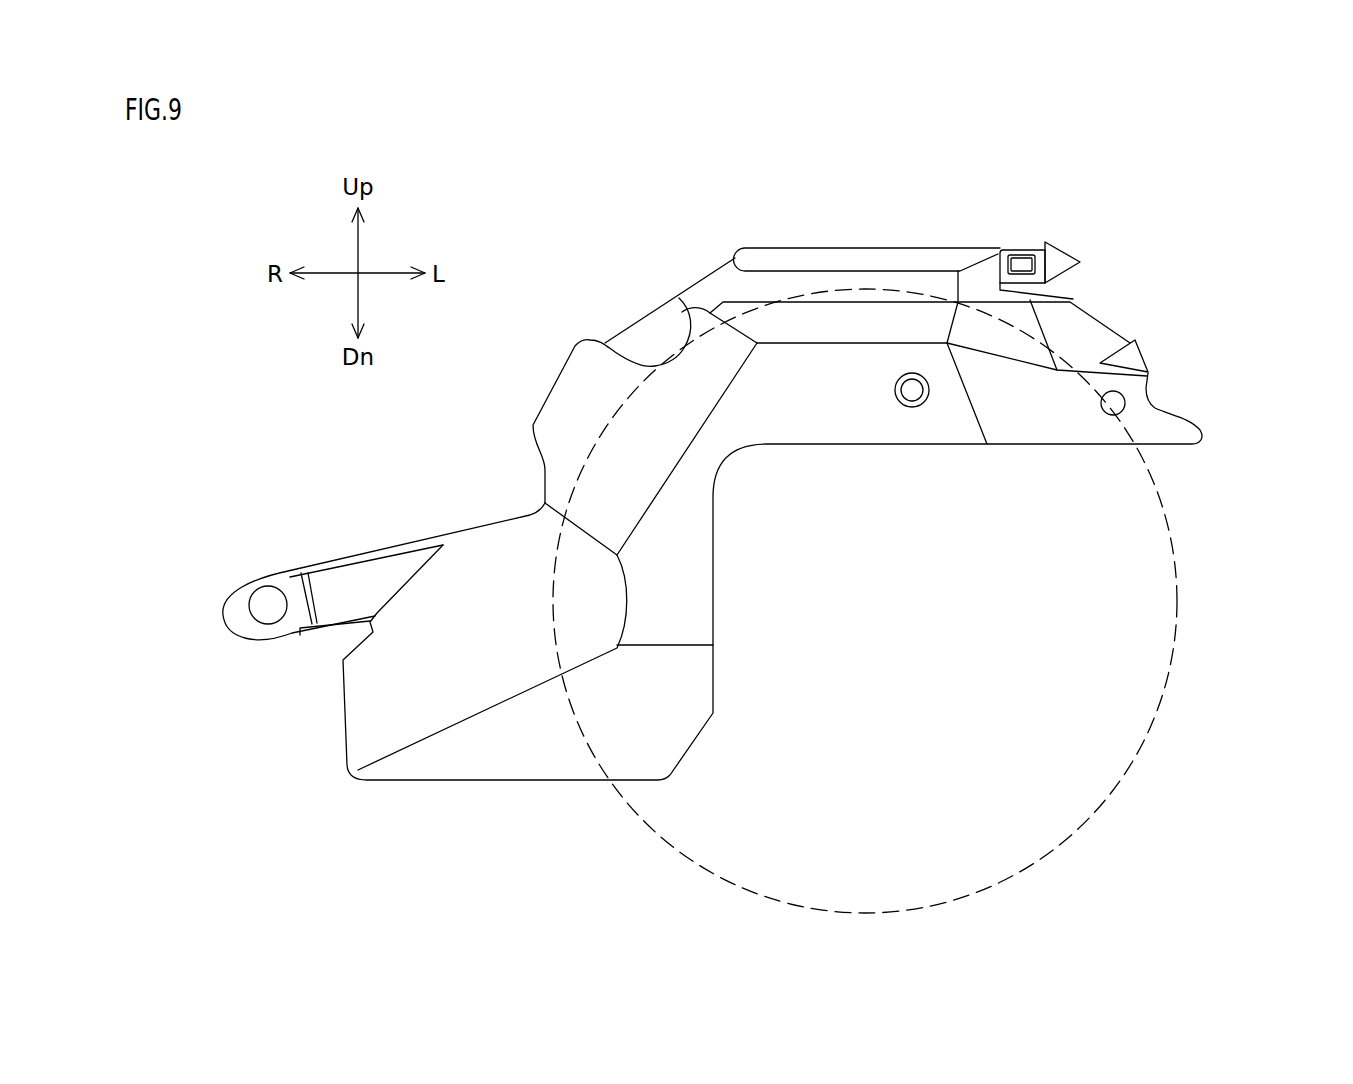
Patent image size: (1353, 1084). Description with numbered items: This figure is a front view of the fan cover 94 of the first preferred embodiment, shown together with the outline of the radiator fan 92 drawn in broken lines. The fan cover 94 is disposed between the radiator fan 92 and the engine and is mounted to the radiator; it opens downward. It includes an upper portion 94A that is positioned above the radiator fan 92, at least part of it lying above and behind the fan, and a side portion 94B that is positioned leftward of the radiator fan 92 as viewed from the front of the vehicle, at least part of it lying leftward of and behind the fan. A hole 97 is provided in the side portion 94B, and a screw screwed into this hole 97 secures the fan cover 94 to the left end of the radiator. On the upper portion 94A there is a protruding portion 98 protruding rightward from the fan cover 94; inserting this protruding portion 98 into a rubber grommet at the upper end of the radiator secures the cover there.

The radiator fan 92 is at (1178, 590).
The fan cover 94 is at (603, 258).
The upper portion 94A is at (922, 242).
The side portion 94B is at (533, 513).
The hole 97 is at (280, 615).
The protruding portion 98 is at (1063, 276).